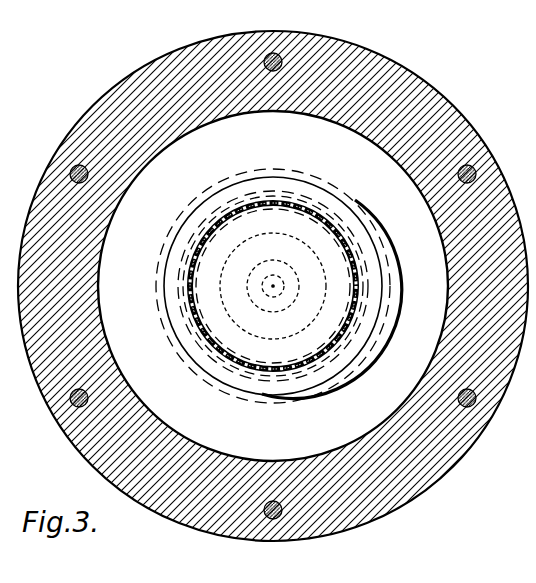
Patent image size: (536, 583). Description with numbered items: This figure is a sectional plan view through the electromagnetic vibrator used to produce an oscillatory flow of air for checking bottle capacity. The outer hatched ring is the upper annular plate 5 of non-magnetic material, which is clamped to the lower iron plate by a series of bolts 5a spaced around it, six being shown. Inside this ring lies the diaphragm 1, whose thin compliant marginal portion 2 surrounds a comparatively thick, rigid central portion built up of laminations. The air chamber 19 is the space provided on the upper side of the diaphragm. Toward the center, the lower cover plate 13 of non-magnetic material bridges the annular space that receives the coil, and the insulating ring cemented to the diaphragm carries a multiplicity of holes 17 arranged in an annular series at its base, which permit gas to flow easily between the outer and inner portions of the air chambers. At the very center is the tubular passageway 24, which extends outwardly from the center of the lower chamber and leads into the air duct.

The diaphragm 1 is at (401, 395).
The compliant marginal portion 2 is at (280, 428).
The upper annular plate 5 is at (401, 71).
The bolts 5a is at (250, 543).
The lower cover plate 13 is at (340, 238).
The holes 17 is at (352, 305).
The air chamber 19 is at (273, 268).
The tubular passageway 24 is at (266, 292).